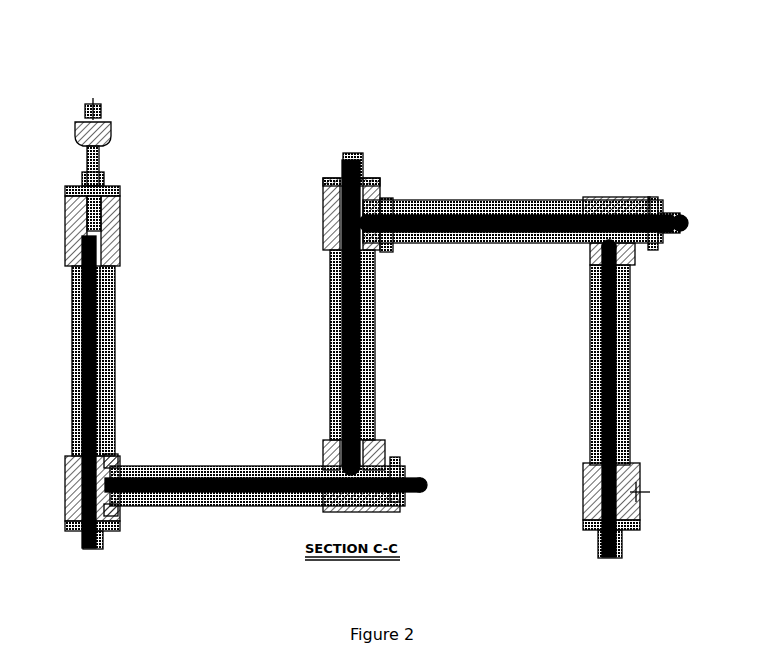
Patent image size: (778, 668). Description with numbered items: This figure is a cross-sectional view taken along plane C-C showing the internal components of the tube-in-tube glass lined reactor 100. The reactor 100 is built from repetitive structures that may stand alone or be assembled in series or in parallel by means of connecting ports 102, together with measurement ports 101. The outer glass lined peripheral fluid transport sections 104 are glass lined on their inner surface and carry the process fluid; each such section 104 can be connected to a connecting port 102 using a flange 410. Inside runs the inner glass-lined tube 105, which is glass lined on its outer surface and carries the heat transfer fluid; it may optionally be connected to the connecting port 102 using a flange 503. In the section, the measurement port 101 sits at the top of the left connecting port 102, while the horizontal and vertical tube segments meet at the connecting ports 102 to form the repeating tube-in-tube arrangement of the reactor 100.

The tube-in-tube glass lined reactor 100 is at (547, 292).
The measurement port 101 is at (118, 188).
The connecting port 102 is at (72, 300).
The outer glass lined peripheral fluid transport section 104 is at (118, 418).
The inner glass-lined tube 105 is at (376, 360).
The flange 410 is at (393, 200).
The flange 503 is at (666, 200).